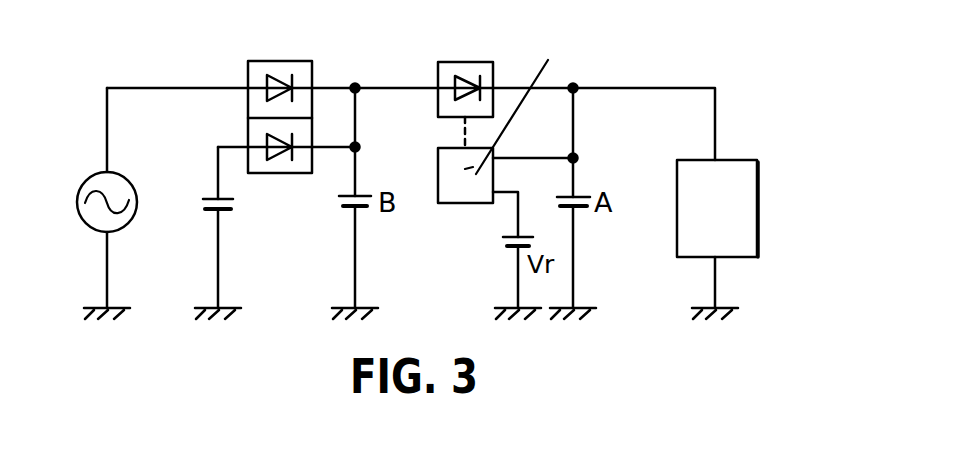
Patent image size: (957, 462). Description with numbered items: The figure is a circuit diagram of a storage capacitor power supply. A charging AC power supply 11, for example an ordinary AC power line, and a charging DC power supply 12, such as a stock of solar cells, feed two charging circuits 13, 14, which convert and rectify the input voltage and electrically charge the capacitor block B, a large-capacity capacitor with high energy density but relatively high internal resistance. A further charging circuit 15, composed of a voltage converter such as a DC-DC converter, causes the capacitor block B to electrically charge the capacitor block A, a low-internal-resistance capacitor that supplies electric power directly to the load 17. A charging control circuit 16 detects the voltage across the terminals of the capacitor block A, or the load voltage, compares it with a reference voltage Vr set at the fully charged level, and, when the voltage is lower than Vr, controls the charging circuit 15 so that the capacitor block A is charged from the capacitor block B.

The charging AC power supply 11 is at (127, 177).
The charging DC power supply 12 is at (201, 206).
The charging circuit 13 is at (293, 61).
The charging circuit 14 is at (283, 173).
The charging circuit 15 is at (469, 62).
The charging control circuit 16 is at (458, 203).
The load 17 is at (677, 247).